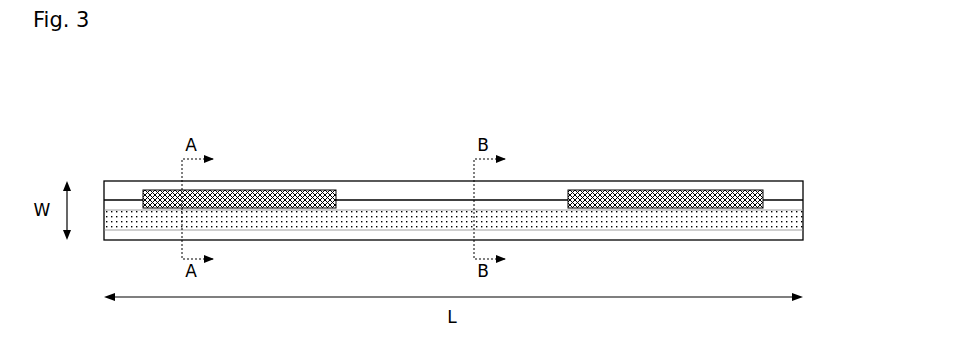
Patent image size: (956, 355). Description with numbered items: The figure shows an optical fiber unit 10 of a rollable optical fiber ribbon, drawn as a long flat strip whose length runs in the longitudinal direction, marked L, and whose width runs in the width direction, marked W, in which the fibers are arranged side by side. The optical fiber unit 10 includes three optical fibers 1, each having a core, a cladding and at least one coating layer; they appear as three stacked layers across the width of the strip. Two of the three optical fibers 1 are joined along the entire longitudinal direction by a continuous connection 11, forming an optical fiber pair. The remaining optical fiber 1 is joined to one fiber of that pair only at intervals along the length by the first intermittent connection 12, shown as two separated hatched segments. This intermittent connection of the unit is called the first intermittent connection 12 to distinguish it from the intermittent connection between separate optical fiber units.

The optical fiber unit 10 is at (443, 105).
The continuous connection 11 is at (453, 176).
The first intermittent connection 12 is at (453, 165).
The optical fiber 1 is at (803, 194).